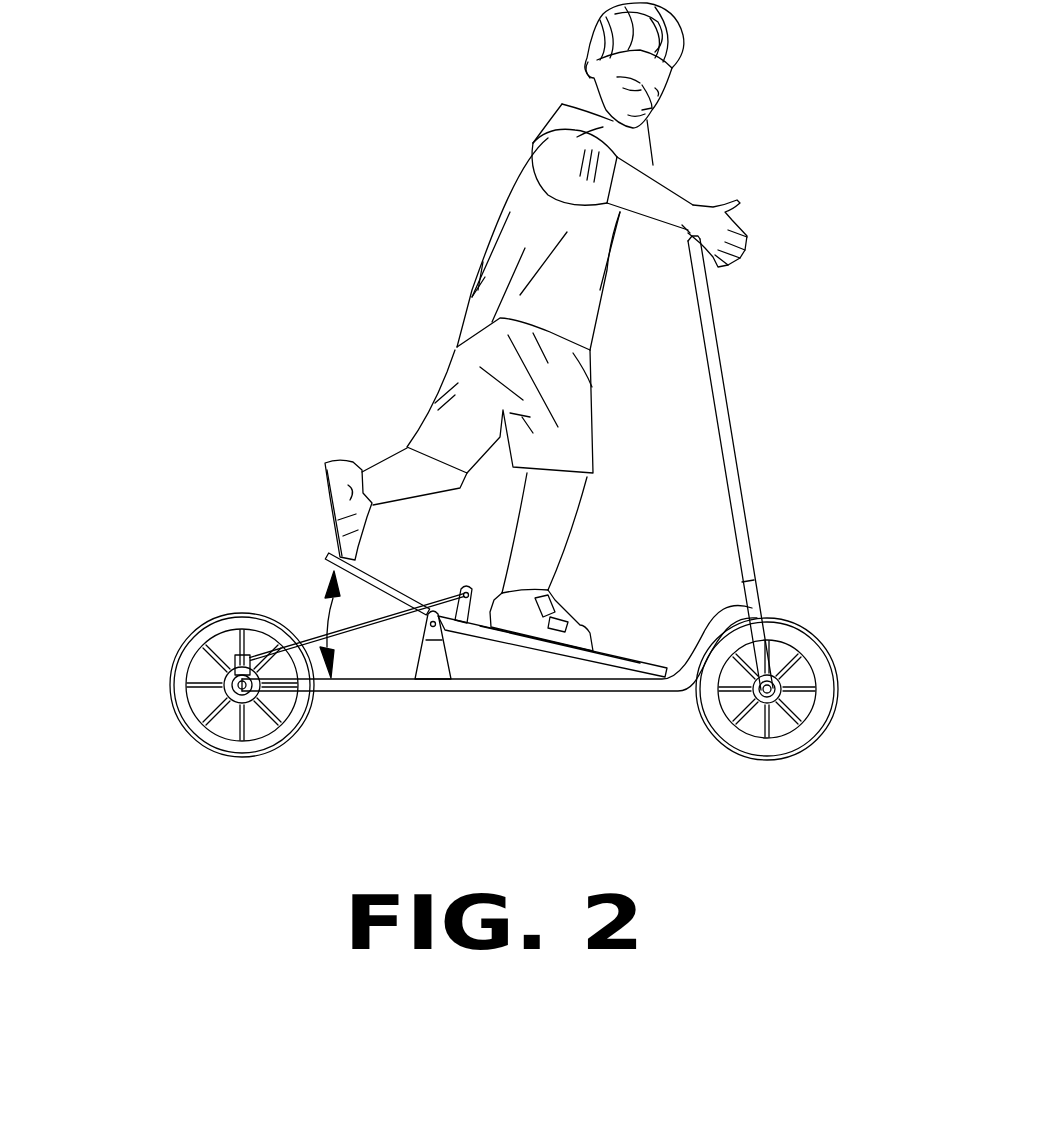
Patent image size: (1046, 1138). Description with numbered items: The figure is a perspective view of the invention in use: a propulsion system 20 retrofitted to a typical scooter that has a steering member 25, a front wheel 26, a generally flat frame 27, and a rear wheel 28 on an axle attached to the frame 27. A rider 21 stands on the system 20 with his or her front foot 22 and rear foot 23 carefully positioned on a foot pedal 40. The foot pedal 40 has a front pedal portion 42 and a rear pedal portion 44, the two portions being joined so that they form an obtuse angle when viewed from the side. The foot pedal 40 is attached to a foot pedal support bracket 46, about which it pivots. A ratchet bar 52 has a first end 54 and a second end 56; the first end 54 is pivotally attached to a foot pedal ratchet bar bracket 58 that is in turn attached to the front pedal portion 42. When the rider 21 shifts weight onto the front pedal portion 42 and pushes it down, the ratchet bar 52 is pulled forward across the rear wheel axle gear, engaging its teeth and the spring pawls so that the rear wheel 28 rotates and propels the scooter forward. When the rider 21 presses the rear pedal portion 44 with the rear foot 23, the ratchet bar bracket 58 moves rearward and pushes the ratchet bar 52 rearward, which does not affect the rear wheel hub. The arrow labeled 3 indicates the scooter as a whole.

The scooter 3 is at (137, 727).
The system 20 is at (265, 597).
The rider 21 is at (668, 78).
The front foot 22 is at (585, 628).
The rear foot 23 is at (338, 467).
The steering member 25 is at (720, 355).
The front wheel 26 is at (810, 632).
The frame 27 is at (655, 692).
The rear wheel 28 is at (202, 627).
The foot pedal 40 is at (483, 668).
The front pedal portion 42 is at (627, 657).
The rear pedal portion 44 is at (322, 553).
The foot pedal support bracket 46 is at (437, 665).
The ratchet bar 52 is at (362, 630).
The first end 54 is at (428, 612).
The second end 56 is at (232, 660).
The foot pedal ratchet bar bracket 58 is at (460, 588).